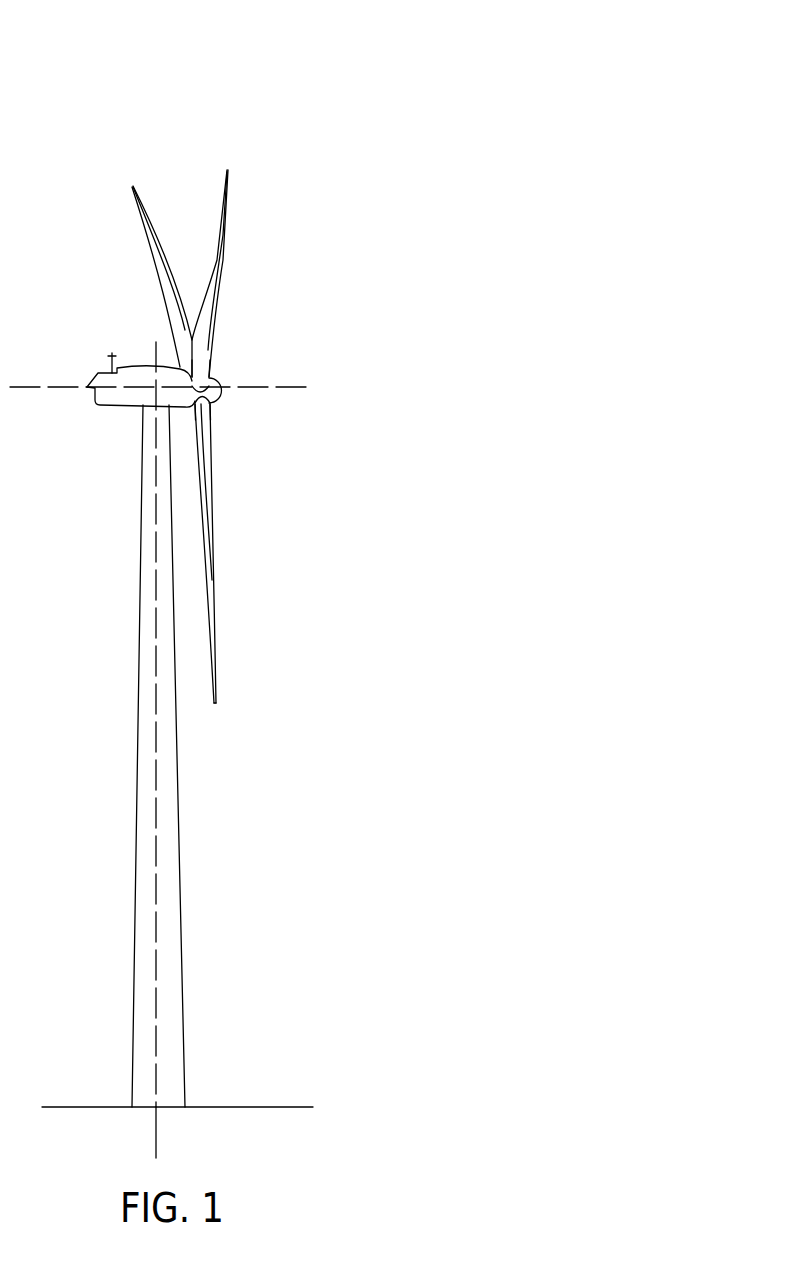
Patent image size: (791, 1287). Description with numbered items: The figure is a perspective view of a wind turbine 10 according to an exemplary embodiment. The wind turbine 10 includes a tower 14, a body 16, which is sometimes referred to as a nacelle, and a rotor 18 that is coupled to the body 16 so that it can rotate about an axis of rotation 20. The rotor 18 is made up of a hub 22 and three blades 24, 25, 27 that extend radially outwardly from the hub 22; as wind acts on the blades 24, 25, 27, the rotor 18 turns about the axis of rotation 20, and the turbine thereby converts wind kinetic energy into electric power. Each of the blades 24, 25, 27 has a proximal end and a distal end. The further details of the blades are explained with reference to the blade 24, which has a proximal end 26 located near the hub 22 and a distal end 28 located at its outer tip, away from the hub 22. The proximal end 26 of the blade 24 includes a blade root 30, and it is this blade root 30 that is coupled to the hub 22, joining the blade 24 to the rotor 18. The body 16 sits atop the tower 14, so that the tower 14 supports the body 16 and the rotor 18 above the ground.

The wind turbine 10 is at (384, 66).
The tower 14 is at (134, 862).
The body 16 is at (104, 405).
The rotor 18 is at (233, 410).
The axis of rotation 20 is at (288, 389).
The hub 22 is at (218, 381).
The blade 24 is at (213, 532).
The blade 25 is at (222, 258).
The proximal end 26 is at (203, 410).
The blade 27 is at (150, 238).
The distal end 28 is at (216, 704).
The blade root 30 is at (205, 365).